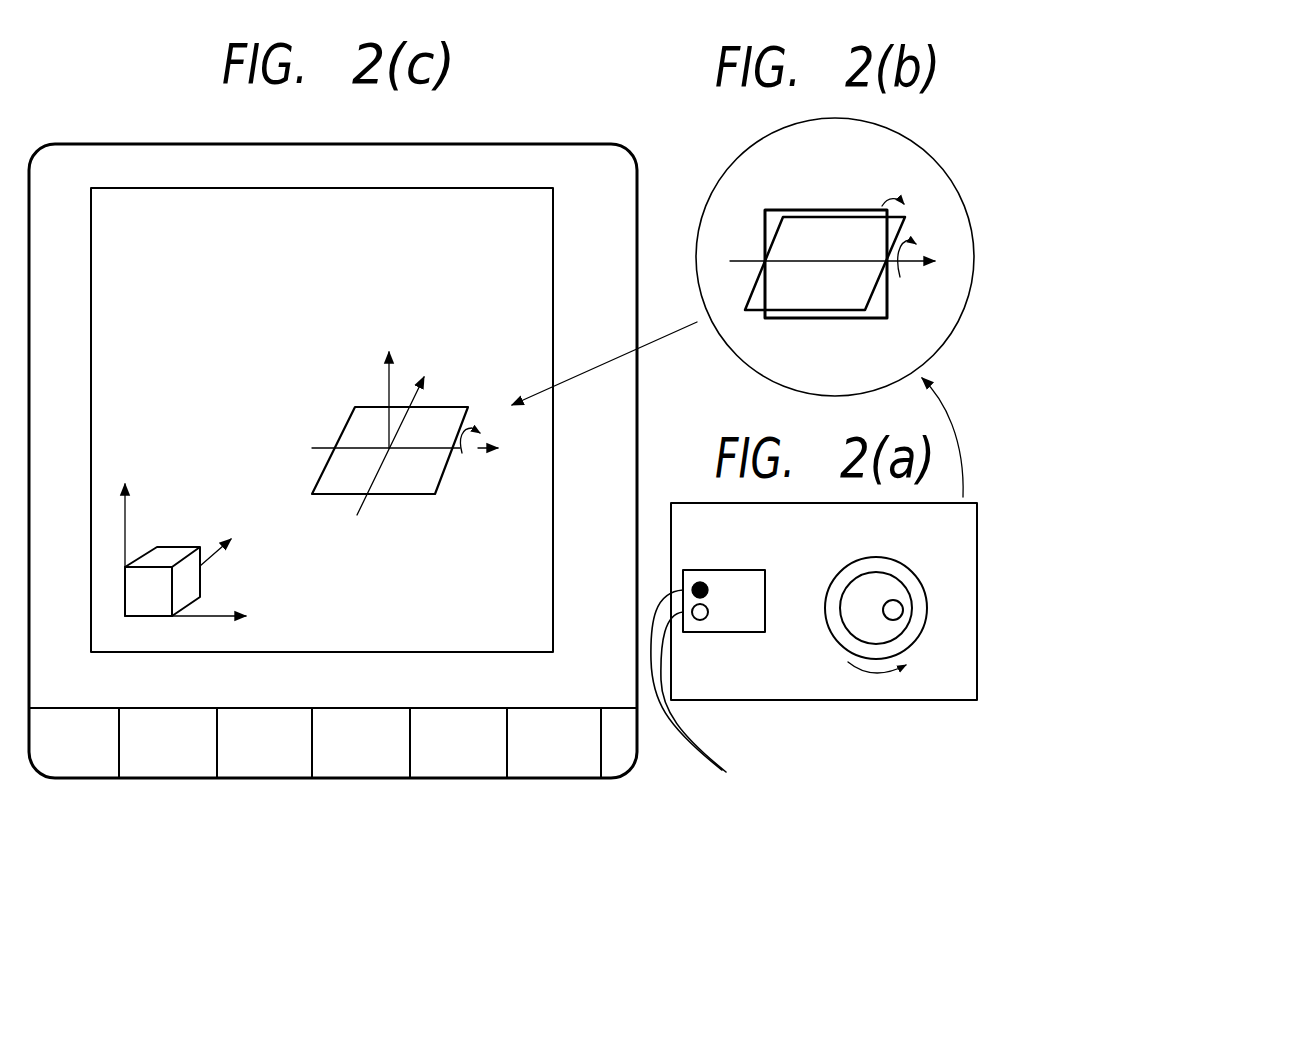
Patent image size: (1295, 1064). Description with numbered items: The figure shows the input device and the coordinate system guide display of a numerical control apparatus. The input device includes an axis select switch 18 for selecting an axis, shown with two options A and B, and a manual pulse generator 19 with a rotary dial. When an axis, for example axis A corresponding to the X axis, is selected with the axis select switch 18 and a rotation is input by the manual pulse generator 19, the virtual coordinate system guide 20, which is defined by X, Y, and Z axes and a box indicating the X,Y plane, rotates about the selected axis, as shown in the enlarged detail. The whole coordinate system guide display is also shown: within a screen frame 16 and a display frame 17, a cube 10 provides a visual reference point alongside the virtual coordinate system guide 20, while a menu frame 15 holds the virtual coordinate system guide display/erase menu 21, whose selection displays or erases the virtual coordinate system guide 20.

In FIG. 2C, the cube 10 is at (147, 611).
In FIG. 2C, the menu frame 15 is at (572, 772).
In FIG. 2C, the screen frame 16 is at (637, 708).
In FIG. 2C, the display frame 17 is at (523, 652).
In FIG. 2A, the axis select switch 18 is at (750, 632).
In FIG. 2A, the manual pulse generator 19 is at (923, 617).
In FIG. 2C, the virtual coordinate system guide 20 is at (420, 494).
In FIG. 2B, the virtual coordinate system guide 20 is at (862, 318).
In FIG. 2C, the virtual coordinate system guide display/erase menu 21 is at (270, 768).